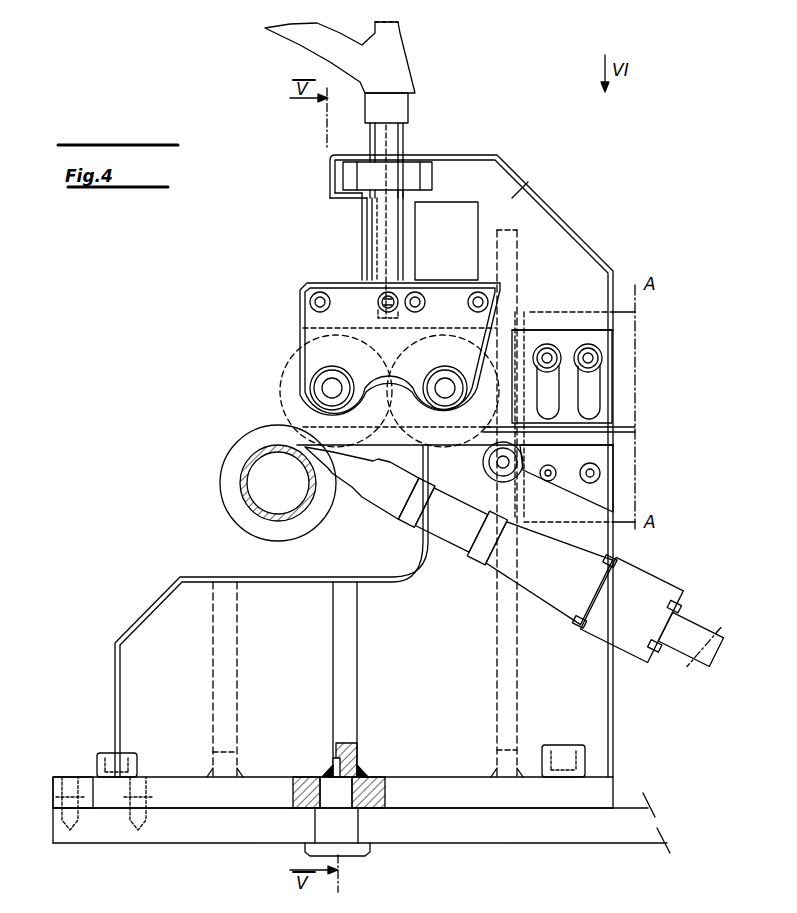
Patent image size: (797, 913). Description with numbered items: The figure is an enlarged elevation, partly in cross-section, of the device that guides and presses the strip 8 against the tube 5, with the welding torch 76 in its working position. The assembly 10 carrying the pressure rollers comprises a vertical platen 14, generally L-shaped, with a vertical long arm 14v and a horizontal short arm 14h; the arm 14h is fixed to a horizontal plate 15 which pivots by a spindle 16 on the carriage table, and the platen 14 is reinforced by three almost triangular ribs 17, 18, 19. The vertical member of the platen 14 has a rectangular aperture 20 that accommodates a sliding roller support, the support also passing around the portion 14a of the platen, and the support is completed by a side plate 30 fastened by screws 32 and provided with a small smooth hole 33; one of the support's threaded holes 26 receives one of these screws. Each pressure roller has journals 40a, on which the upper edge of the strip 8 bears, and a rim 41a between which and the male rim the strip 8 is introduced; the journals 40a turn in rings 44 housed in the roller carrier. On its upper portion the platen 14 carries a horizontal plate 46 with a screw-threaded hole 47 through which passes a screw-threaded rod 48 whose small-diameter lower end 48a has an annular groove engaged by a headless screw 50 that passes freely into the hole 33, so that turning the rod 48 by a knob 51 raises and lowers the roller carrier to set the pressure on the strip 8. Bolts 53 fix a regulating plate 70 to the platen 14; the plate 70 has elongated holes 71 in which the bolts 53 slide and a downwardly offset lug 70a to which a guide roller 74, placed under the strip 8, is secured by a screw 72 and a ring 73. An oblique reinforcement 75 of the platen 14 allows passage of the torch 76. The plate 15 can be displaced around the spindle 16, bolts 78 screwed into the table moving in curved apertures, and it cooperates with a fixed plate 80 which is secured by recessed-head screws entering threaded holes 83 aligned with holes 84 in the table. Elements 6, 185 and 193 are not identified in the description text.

The tube 5 is at (236, 472).
The tube 6 is at (233, 500).
The strip 8 is at (390, 450).
The assembly carrying the pressure rollers 10 is at (290, 298).
The vertical platen 14 is at (565, 250).
The portion of the platen 14a is at (452, 205).
The horizontal short arm 14h is at (150, 668).
The vertical long arm 14v is at (507, 192).
The horizontal plate 15 is at (466, 792).
The spindle 16 is at (360, 818).
The rib 17 is at (356, 670).
The rib 18 is at (228, 661).
The rib 19 is at (497, 658).
The rectangular aperture 20 is at (470, 205).
The screw-threaded hole 26 is at (658, 843).
The side plate 30 is at (302, 331).
The screws 32 is at (308, 292).
The smooth hole 33 is at (388, 290).
The journals 40a is at (322, 390).
The rim 41a is at (290, 368).
The rings 44 is at (334, 371).
The horizontal plate 46 is at (345, 175).
The screw-threaded hole 47 is at (407, 178).
The screw-threaded rod 48 is at (400, 140).
The lower end of the rod 48a is at (408, 282).
The headless screw 50 is at (380, 305).
The knob 51 is at (318, 45).
The bolts 53 is at (584, 346).
The regulating plate 70 is at (528, 322).
The lug 70a is at (546, 482).
The elongated holes 71 is at (552, 396).
The screw 72 is at (523, 463).
The ring 73 is at (474, 513).
The guide roller 74 is at (487, 472).
The oblique reinforcement 75 is at (588, 498).
The welding torch 76 is at (549, 573).
The bolts 78 is at (137, 760).
The fixed plate 80 is at (84, 777).
The screw-threaded holes 83 is at (58, 800).
The holes 84 is at (58, 822).
The tabs 185 is at (615, 560).
The drive block 193 is at (652, 611).